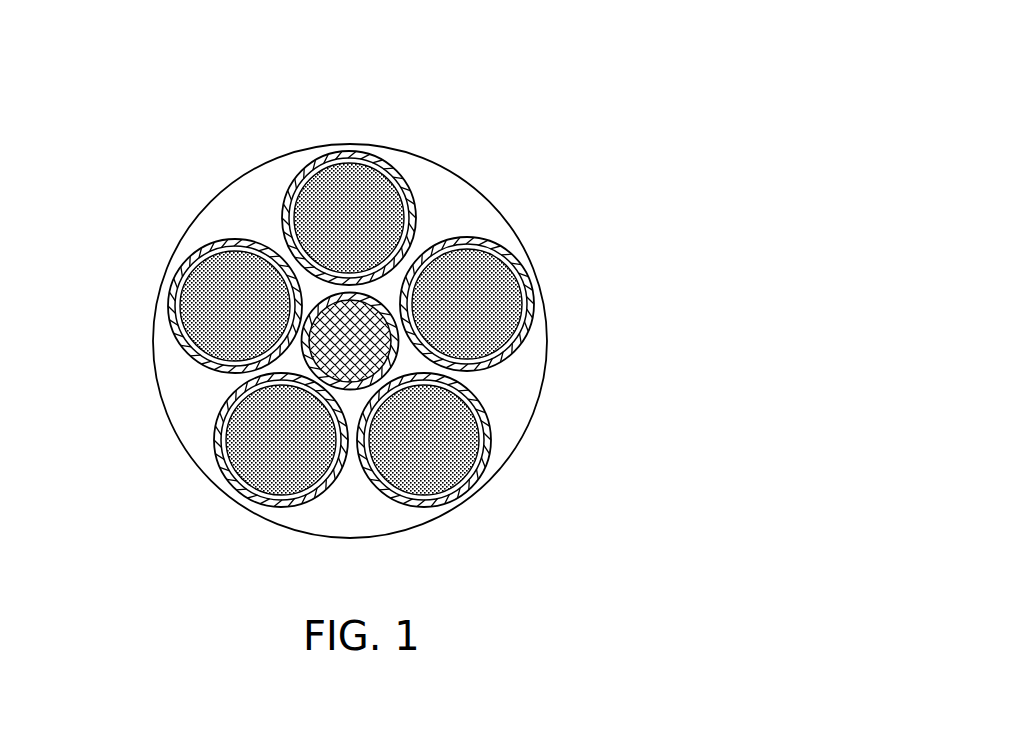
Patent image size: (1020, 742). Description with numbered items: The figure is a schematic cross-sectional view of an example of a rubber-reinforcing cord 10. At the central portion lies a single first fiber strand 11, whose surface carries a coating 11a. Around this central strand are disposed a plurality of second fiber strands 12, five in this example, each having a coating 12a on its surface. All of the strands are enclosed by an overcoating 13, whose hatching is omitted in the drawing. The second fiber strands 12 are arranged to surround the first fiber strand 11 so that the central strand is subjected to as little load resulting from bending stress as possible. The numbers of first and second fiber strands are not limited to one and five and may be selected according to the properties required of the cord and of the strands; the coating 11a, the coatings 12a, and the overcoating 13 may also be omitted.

The rubber-reinforcing cord 10 is at (100, 112).
The first fiber strand 11 is at (313, 282).
The coating 11a is at (373, 307).
The second fiber strands 12 is at (360, 136).
The coatings 12a is at (385, 168).
The overcoating 13 is at (527, 383).